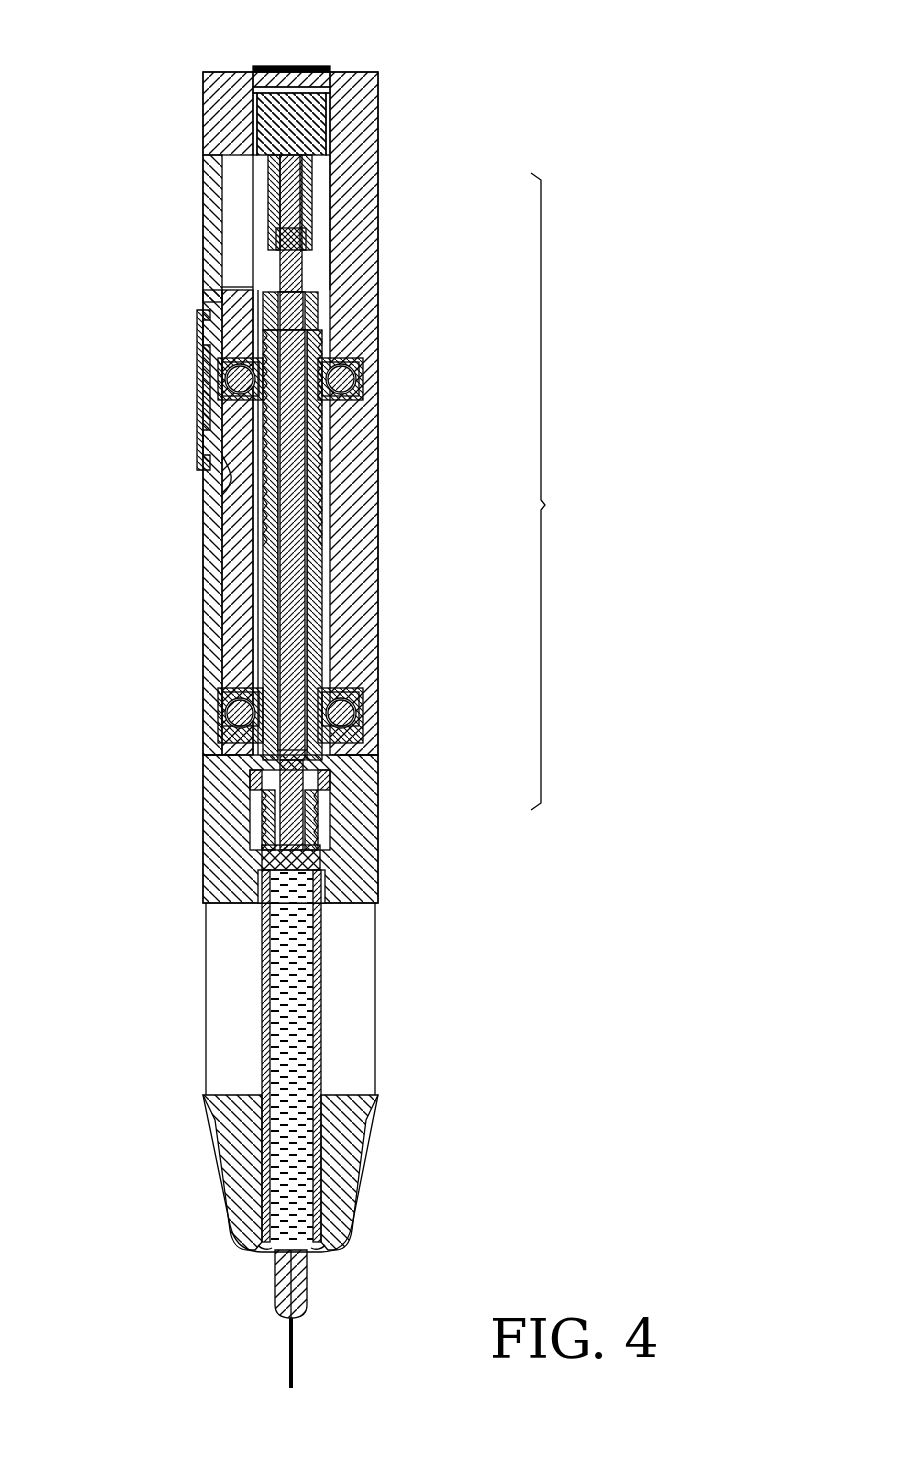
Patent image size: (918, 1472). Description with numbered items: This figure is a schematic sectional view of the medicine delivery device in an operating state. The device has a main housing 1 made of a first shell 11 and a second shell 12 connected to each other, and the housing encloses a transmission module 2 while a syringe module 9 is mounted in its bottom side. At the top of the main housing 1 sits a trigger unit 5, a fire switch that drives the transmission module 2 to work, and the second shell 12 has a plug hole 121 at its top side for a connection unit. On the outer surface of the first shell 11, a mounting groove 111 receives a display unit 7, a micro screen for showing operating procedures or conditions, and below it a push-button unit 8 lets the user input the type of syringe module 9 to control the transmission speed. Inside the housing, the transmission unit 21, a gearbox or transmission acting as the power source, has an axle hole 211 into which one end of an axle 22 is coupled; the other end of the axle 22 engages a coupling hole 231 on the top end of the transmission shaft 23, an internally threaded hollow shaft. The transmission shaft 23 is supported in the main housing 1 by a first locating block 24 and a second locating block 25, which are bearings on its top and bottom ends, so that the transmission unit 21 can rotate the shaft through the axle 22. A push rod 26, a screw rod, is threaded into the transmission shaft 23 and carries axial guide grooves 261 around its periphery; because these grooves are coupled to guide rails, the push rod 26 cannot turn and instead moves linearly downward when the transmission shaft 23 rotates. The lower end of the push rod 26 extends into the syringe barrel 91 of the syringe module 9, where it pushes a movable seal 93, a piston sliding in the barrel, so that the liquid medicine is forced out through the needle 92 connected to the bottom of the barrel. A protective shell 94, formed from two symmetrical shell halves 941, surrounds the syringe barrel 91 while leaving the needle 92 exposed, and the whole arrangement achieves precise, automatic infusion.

The main housing 1 is at (196, 83).
The first shell 11 is at (228, 118).
The second shell 12 is at (370, 102).
The trigger unit 5 is at (302, 67).
The transmission unit 21 is at (330, 137).
The display unit 7 is at (212, 212).
The axle 22 is at (302, 270).
The axle hole 211 is at (294, 240).
The mounting groove 111 is at (222, 292).
The coupling hole 231 is at (310, 298).
The plug hole 121 is at (222, 488).
The push-button unit 8 is at (203, 381).
The first locating block 24 is at (364, 372).
The transmission shaft 23 is at (325, 535).
The second locating block 25 is at (348, 708).
The push rod 26 is at (318, 817).
The axial guide grooves 261 is at (262, 796).
The movable seal 93 is at (262, 852).
The syringe module 9 is at (380, 1156).
The syringe barrel 91 is at (262, 998).
The protective shell 94 is at (213, 1146).
The shell halves 941 is at (242, 1196).
The needle 92 is at (277, 1284).
The transmission module 2 is at (554, 491).